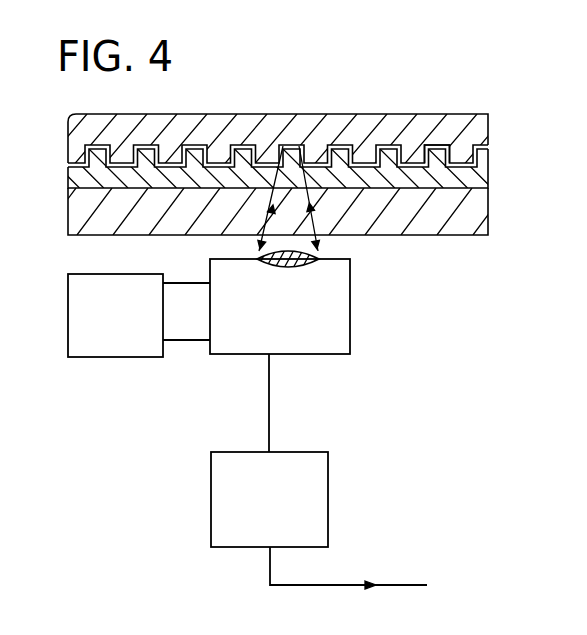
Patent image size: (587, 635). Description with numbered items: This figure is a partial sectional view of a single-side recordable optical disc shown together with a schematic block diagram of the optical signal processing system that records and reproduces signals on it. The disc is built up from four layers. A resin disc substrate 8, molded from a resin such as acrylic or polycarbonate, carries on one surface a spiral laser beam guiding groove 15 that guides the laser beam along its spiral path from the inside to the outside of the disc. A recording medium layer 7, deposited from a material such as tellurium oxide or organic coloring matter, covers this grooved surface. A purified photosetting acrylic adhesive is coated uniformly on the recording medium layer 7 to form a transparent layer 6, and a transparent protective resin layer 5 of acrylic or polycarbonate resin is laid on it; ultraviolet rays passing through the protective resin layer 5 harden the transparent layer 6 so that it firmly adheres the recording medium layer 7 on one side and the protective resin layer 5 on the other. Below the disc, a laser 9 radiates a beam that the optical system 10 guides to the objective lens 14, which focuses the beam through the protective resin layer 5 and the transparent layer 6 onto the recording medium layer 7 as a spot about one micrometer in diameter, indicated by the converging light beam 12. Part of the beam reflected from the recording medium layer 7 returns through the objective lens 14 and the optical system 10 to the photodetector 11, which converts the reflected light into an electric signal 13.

The transparent protective resin layer 5 is at (440, 235).
The transparent layer 6 is at (489, 167).
The recording medium layer 7 is at (70, 165).
The resin disc substrate 8 is at (357, 112).
The laser 9 is at (68, 313).
The optical system 10 is at (350, 313).
The photodetector 11 is at (328, 512).
The light beam 12 is at (258, 240).
The electric signal 13 is at (371, 575).
The objective lens 14 is at (320, 263).
The laser beam guiding groove 15 is at (432, 143).